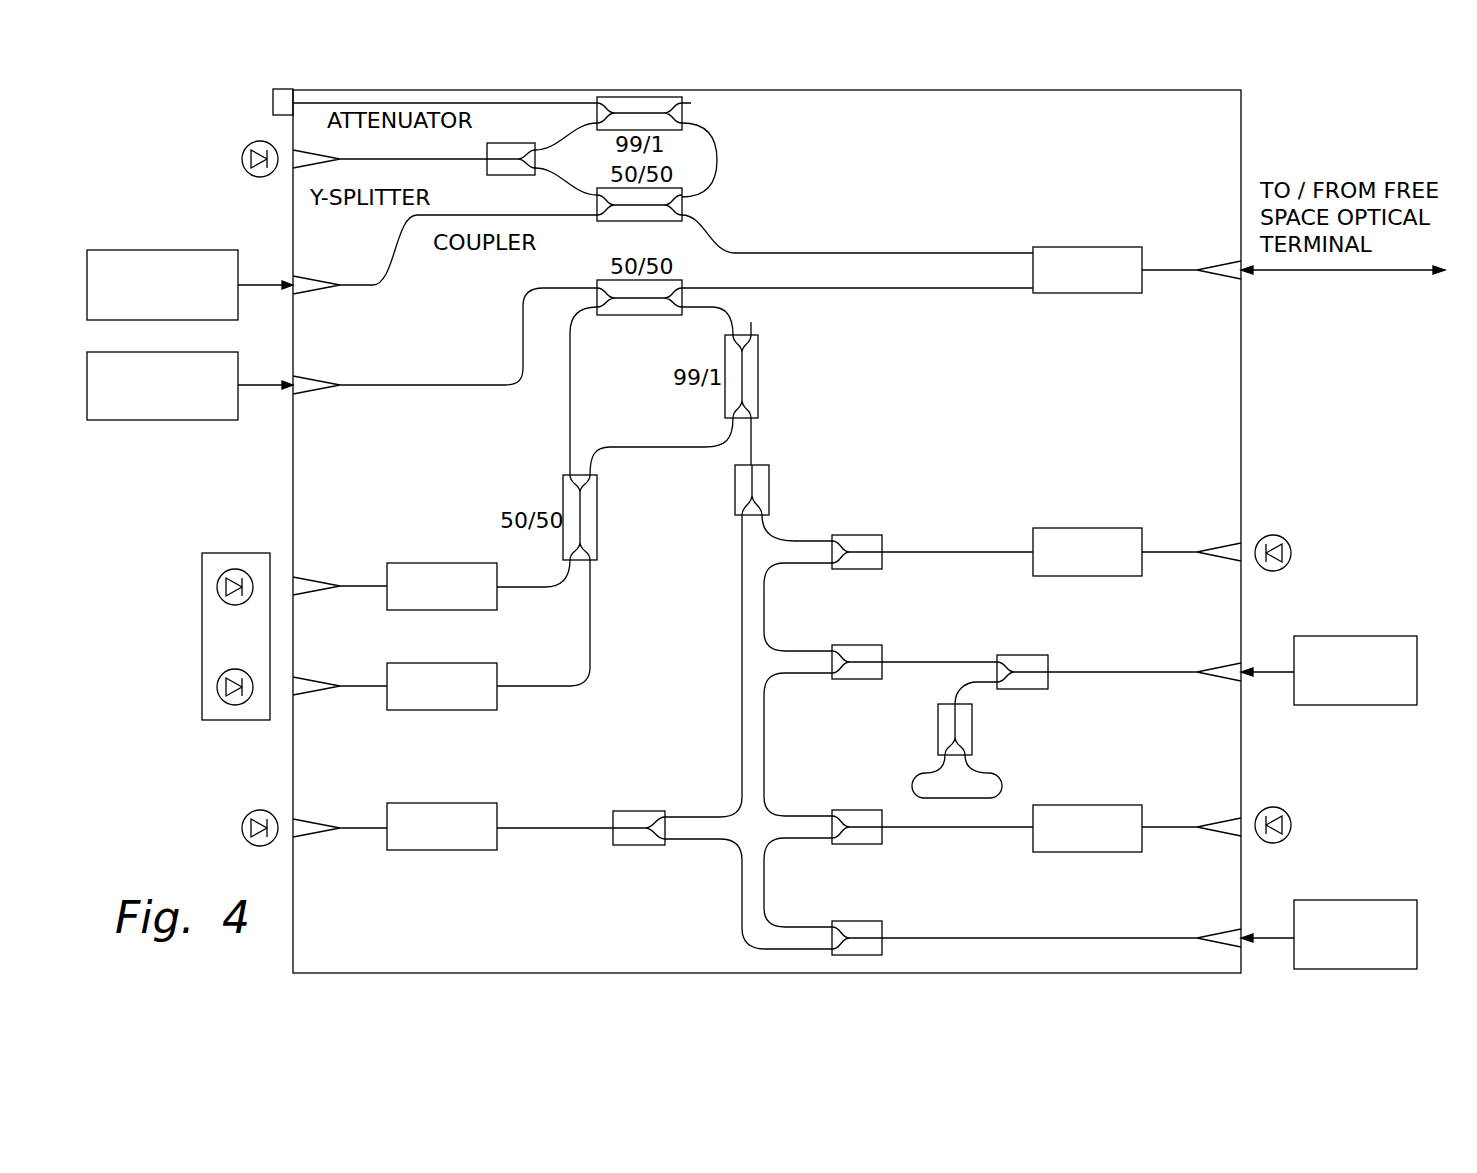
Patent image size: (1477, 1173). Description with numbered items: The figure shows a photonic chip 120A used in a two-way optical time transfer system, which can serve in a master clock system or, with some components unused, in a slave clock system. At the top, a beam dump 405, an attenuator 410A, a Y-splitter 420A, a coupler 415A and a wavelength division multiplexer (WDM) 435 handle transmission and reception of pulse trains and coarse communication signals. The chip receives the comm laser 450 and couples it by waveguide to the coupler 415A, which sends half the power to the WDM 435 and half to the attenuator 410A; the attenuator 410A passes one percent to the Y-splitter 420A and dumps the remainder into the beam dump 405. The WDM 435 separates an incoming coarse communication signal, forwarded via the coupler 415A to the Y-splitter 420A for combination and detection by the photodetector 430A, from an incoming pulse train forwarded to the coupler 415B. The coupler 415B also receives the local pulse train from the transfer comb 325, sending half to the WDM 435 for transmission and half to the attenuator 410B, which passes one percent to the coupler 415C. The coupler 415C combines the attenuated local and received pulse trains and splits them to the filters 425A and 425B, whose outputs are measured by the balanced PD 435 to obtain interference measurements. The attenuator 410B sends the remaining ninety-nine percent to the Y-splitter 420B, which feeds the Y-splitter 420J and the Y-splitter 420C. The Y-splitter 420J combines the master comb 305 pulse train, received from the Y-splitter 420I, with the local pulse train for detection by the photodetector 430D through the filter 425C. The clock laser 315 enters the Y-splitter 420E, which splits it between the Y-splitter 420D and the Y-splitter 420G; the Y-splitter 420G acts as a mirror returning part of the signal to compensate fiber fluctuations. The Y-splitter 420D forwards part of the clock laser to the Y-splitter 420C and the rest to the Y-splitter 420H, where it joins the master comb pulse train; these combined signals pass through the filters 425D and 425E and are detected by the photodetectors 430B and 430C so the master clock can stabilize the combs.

The photonic chip 120A is at (1243, 112).
The beam dump 405 is at (272, 104).
The attenuator 410A is at (597, 112).
The attenuator 410B is at (760, 376).
The coupler 415A is at (635, 212).
The coupler 415B is at (643, 310).
The coupler 415C is at (588, 519).
The Y-splitter 420A is at (511, 166).
The Y-splitter 420B is at (745, 486).
The Y-splitter 420C is at (858, 545).
The Y-splitter 420D is at (858, 655).
The Y-splitter 420E is at (1023, 665).
The Y-splitter 420G is at (962, 727).
The Y-splitter 420H is at (858, 812).
The Y-splitter 420I is at (858, 925).
The Y-splitter 420J is at (637, 813).
The filter 425A is at (480, 563).
The filter 425B is at (480, 662).
The filter 425C is at (480, 803).
The filter 425D is at (1125, 528).
The filter 425E is at (1125, 805).
The photodetector 430A is at (252, 176).
The photodetector 430B is at (1283, 537).
The photodetector 430C is at (1283, 808).
The photodetector 430D is at (252, 810).
The wavelength division multiplexer 435 is at (1112, 247).
The communication laser 450 is at (166, 250).
The transfer comb 325 is at (160, 421).
The clock laser 315 is at (1345, 636).
The master comb 305 is at (1345, 900).